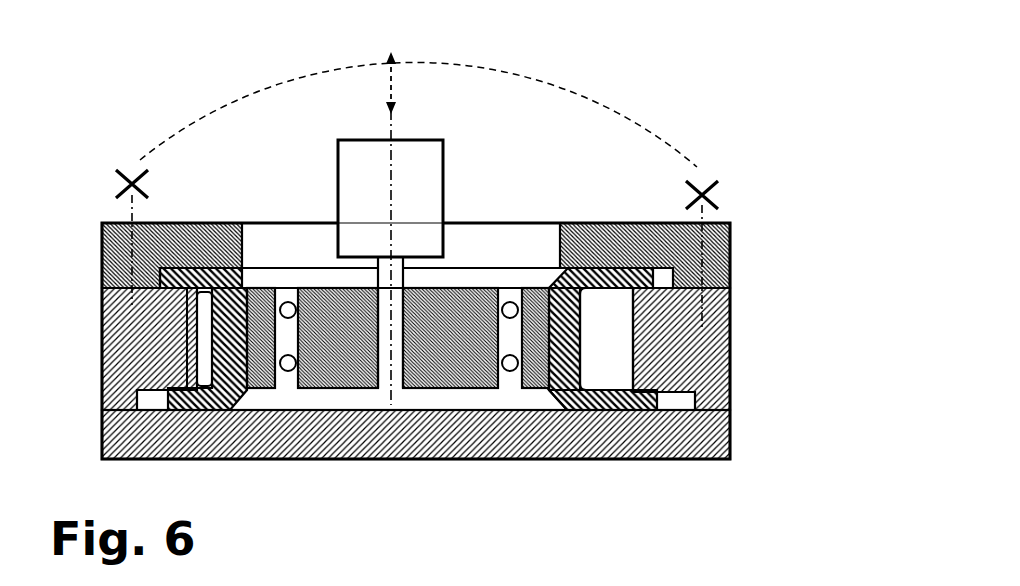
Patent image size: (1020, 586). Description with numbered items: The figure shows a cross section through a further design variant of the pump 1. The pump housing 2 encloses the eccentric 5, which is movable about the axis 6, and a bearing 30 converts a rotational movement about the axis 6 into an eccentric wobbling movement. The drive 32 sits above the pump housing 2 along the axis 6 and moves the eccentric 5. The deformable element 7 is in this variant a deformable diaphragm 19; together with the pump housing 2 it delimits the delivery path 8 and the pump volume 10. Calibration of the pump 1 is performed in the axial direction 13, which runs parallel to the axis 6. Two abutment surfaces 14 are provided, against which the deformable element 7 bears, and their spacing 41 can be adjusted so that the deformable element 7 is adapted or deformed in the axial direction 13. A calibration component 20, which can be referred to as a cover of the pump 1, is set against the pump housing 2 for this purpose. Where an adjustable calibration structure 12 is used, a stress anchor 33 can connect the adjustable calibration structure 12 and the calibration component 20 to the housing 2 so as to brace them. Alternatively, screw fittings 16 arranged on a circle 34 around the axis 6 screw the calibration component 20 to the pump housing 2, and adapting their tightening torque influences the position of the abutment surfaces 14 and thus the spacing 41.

The pump 1 is at (133, 121).
The pump housing 2 is at (623, 462).
The eccentric 5 is at (445, 390).
The axis 6 is at (392, 460).
The deformable element 7 is at (547, 410).
The delivery path 8 is at (620, 333).
The pump volume 10 is at (618, 360).
The adjustable calibration structure 12 is at (720, 183).
The axial direction 13 is at (390, 80).
The abutment surfaces 14 is at (242, 273).
The screw fittings 16 is at (700, 183).
The deformable diaphragm 19 is at (637, 403).
The calibration component 20 is at (102, 247).
The bearing 30 is at (283, 373).
The drive 32 is at (443, 140).
The stress anchor 33 is at (403, 275).
The circle 34 is at (633, 107).
The spacing 41 is at (183, 363).